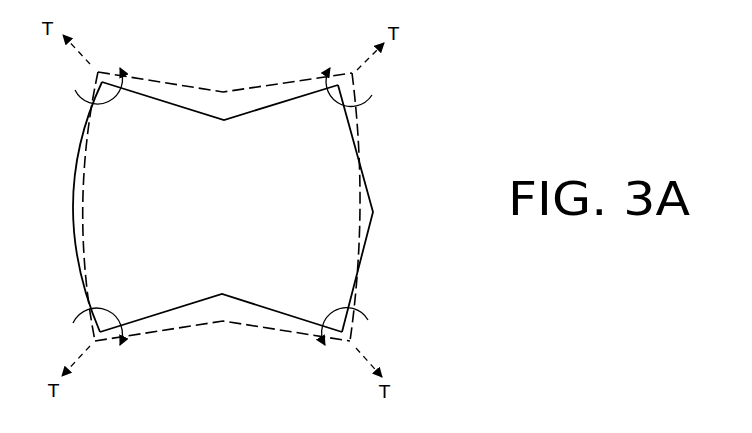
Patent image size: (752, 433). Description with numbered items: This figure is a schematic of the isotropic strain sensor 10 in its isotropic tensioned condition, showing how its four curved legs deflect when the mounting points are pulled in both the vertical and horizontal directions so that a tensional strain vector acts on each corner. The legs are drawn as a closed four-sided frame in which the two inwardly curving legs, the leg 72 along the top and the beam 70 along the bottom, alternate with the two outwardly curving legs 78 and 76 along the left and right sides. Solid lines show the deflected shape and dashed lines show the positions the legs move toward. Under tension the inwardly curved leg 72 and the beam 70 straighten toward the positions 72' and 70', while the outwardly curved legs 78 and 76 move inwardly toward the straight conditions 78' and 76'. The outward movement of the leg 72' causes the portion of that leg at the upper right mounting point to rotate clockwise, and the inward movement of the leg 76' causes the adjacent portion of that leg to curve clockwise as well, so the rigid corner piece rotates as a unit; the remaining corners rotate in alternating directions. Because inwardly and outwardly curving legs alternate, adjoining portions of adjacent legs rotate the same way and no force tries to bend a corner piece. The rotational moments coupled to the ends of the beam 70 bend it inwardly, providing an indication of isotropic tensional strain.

The isotropic strain sensor 10 is at (232, 50).
The beam leg 70 is at (221, 297).
The straightened beam position 70' is at (222, 348).
The inwardly curved leg 72 is at (220, 117).
The straightened leg position 72' is at (225, 70).
The outwardly curved leg 76 is at (381, 208).
The straight condition of outwardly curved leg 76' is at (335, 207).
The outwardly curved leg 78 is at (64, 207).
The straight condition of outwardly curved leg 78' is at (110, 206).